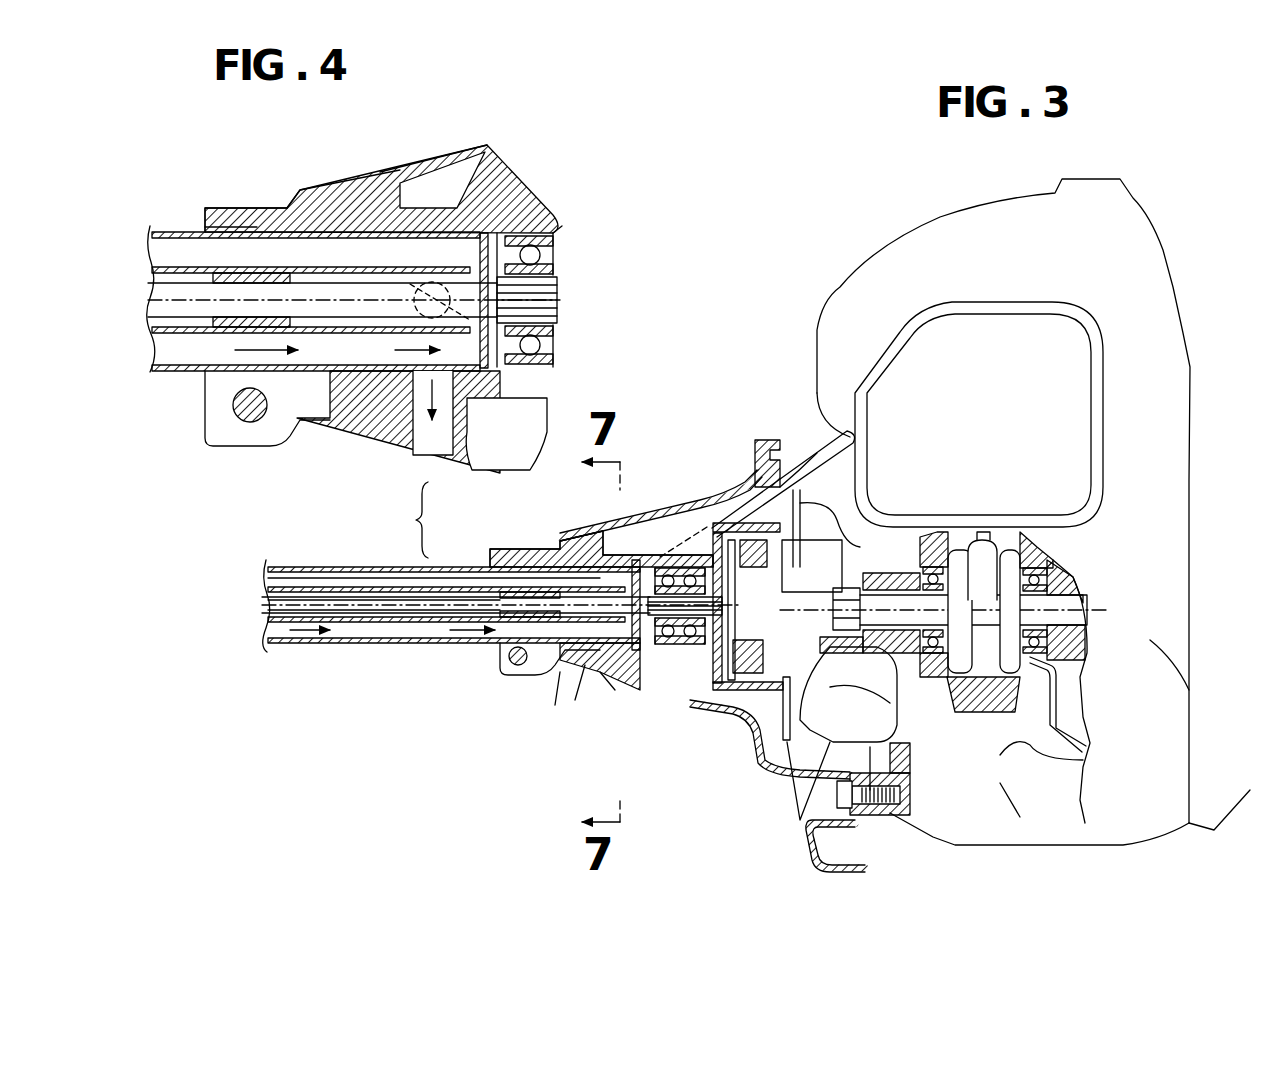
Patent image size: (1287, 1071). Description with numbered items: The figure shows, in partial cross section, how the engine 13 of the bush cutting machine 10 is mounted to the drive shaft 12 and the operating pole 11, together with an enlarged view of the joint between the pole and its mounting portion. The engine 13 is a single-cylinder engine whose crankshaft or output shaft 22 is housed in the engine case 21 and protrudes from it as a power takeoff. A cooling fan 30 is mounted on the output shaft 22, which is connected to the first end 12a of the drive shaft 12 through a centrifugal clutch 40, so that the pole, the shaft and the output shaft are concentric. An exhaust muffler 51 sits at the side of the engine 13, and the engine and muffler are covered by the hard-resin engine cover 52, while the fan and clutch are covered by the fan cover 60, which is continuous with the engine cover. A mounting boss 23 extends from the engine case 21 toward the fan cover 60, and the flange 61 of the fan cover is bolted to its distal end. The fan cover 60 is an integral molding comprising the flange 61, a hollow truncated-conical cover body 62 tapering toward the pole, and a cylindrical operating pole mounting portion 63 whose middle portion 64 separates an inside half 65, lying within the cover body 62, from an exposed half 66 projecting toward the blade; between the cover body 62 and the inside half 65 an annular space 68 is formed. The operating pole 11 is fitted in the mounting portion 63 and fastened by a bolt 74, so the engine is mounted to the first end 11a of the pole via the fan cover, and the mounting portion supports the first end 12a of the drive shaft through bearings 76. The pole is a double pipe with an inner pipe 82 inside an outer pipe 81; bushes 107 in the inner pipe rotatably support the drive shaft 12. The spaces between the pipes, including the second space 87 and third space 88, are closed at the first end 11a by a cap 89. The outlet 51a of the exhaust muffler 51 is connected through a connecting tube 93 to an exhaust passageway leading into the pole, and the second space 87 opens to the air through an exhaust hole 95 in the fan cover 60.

In FIG. 4, the bush cutting machine 10 is at (603, 205).
In FIG. 3, the bush cutting machine 10 is at (1197, 250).
In FIG. 4, the operating pole 11 is at (307, 379).
In FIG. 3, the operating pole 11 is at (451, 664).
In FIG. 4, the first end of the operating pole 11a is at (478, 265).
In FIG. 3, the first end of the operating pole 11a is at (622, 553).
In FIG. 4, the drive shaft 12 is at (148, 340).
In FIG. 3, the drive shaft 12 is at (270, 623).
In FIG. 4, the first end of the drive shaft 12a is at (542, 302).
In FIG. 3, the first end of the drive shaft 12a is at (703, 652).
In FIG. 3, the engine 13 is at (1022, 709).
In FIG. 3, the engine case 21 is at (992, 722).
In FIG. 3, the crankshaft (output shaft) 22 is at (936, 660).
In FIG. 3, the mounting boss 23 is at (886, 812).
In FIG. 3, the cooling fan 30 is at (807, 822).
In FIG. 3, the clutch 40 is at (777, 702).
In FIG. 3, the exhaust muffler 51 is at (907, 297).
In FIG. 3, the outlet of the exhaust muffler 51a is at (838, 438).
In FIG. 3, the engine cover 52 is at (1163, 805).
In FIG. 4, the fan cover 60 is at (236, 196).
In FIG. 3, the fan cover 60 is at (750, 752).
In FIG. 3, the flange of the fan cover 61 is at (856, 815).
In FIG. 4, the cover body 62 is at (400, 185).
In FIG. 3, the cover body 62 is at (713, 497).
In FIG. 3, the operating pole mounting portion 63 is at (409, 520).
In FIG. 4, the middle portion 64 is at (360, 195).
In FIG. 3, the middle portion 64 is at (585, 550).
In FIG. 4, the inside half 65 is at (527, 237).
In FIG. 3, the inside half 65 is at (600, 540).
In FIG. 4, the exposed half 66 is at (268, 205).
In FIG. 3, the exposed half 66 is at (520, 553).
In FIG. 4, the annular space 68 is at (455, 165).
In FIG. 3, the annular space 68 is at (693, 527).
In FIG. 4, the bolt 74 is at (250, 405).
In FIG. 3, the bolt 74 is at (518, 668).
In FIG. 4, the bearings 76 is at (542, 258).
In FIG. 3, the bearings 76 is at (670, 652).
In FIG. 4, the outer pipe 81 is at (170, 373).
In FIG. 3, the outer pipe 81 is at (330, 644).
In FIG. 4, the inner pipe 82 is at (197, 333).
In FIG. 3, the inner pipe 82 is at (378, 623).
In FIG. 4, the second space 87 is at (313, 355).
In FIG. 3, the second space 87 is at (422, 636).
In FIG. 3, the third space 88 is at (360, 578).
In FIG. 4, the cap 89 is at (503, 357).
In FIG. 4, the connecting tube 93 is at (566, 233).
In FIG. 3, the connecting tube 93 is at (817, 453).
In FIG. 4, the exhaust hole in the fan cover 95 is at (423, 432).
In FIG. 3, the exhaust hole in the fan cover 95 is at (610, 683).
In FIG. 3, the bushes 107 is at (508, 625).